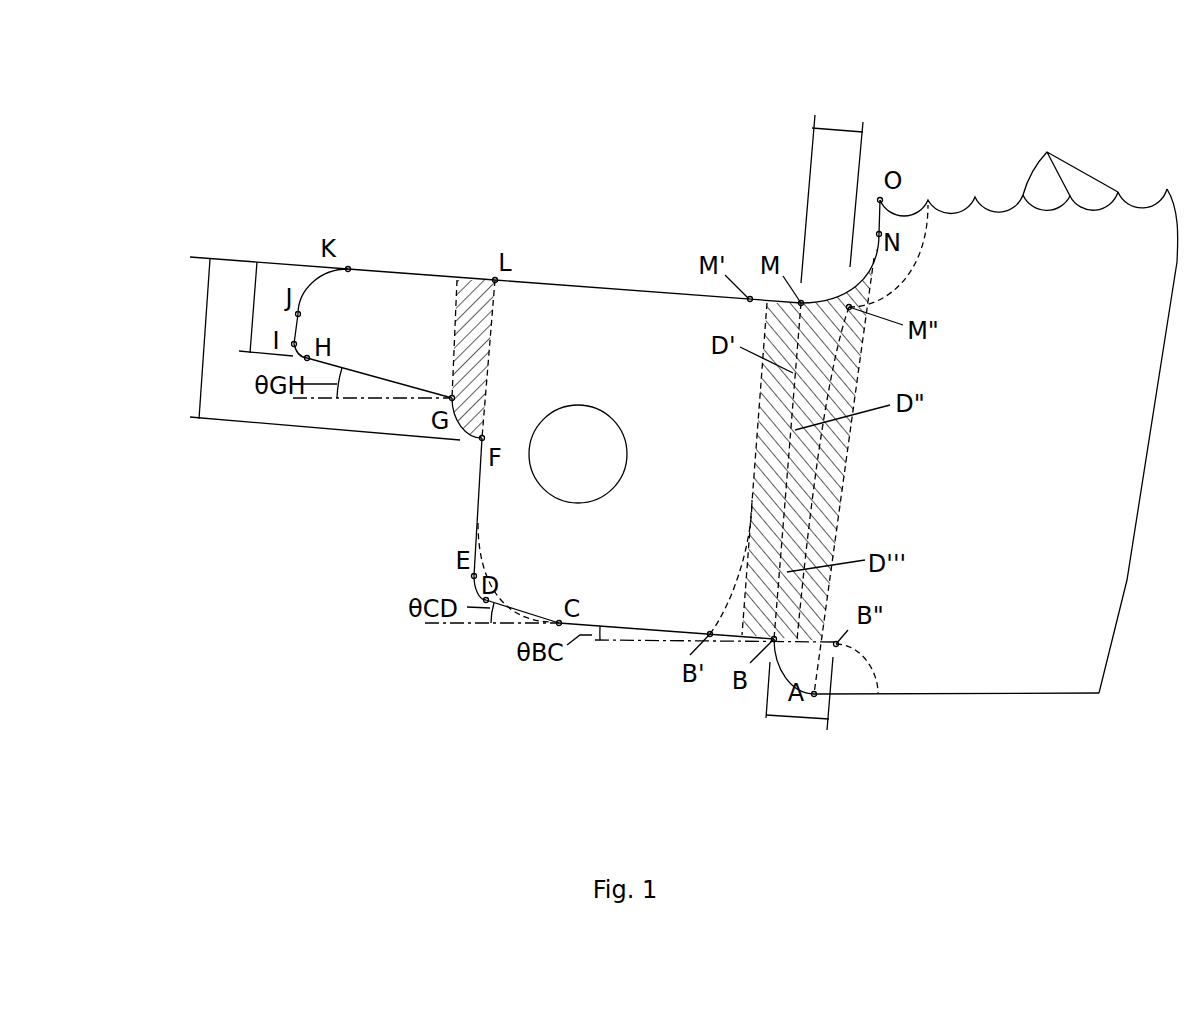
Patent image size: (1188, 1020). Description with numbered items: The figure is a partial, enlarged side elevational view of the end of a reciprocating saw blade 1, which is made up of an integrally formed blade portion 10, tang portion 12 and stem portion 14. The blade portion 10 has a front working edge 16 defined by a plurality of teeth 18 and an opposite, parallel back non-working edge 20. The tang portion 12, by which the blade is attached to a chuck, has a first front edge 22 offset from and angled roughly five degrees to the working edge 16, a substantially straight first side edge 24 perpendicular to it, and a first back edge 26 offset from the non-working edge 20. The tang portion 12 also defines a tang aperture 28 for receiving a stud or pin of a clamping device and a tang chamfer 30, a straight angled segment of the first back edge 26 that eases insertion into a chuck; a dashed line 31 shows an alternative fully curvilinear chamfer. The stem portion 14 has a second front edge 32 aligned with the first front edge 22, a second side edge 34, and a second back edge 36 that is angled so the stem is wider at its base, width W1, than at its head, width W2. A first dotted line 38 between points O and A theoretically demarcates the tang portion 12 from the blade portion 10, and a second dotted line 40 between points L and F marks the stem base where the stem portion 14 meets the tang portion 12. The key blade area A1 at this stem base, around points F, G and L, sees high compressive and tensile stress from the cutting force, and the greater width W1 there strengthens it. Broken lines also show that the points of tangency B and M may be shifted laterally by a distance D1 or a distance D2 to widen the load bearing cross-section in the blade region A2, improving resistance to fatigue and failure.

The reciprocating saw blade 1 is at (205, 130).
The blade portion 10 is at (1002, 474).
The tang portion 12 is at (667, 409).
The stem portion 14 is at (376, 336).
The working edge 16 is at (955, 218).
The teeth 18 is at (1070, 164).
The non-working edge 20 is at (933, 695).
The first front edge 22 is at (572, 285).
The first side edge 24 is at (478, 500).
The first back edge 26 is at (673, 630).
The tang aperture 28 is at (630, 457).
The tang chamfer 30 is at (525, 608).
The dashed line 31 is at (487, 548).
The second front edge 32 is at (423, 273).
The second side edge 34 is at (298, 327).
The second back edge 36 is at (383, 378).
The first dotted line 38 is at (843, 488).
The second dotted line 40 is at (490, 342).
The key blade area A1 is at (467, 380).
The blade region A2 is at (817, 540).
The distance D1 is at (799, 705).
The distance D2 is at (832, 189).
The width W1 is at (308, 348).
The width W2 is at (252, 309).